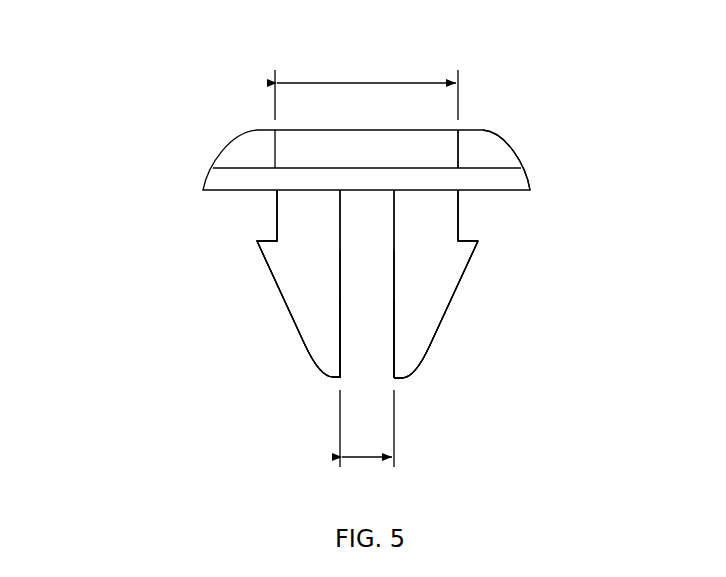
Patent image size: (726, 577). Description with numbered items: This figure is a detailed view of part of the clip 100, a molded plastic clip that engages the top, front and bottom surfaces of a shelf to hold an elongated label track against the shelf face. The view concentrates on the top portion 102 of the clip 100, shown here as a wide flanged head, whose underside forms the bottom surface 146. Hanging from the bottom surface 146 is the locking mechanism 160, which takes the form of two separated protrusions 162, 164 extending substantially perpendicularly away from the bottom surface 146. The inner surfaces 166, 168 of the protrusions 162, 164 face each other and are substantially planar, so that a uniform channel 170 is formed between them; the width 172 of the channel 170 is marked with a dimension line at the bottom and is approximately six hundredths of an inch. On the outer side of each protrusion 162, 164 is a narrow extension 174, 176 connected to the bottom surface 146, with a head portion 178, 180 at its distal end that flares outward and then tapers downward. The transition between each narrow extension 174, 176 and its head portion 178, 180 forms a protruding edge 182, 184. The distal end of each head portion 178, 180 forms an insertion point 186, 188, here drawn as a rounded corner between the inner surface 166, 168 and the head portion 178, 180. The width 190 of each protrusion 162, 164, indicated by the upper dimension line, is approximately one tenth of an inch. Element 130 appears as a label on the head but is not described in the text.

The clip 100 is at (555, 66).
The top portion 102 is at (475, 78).
The head 130 is at (258, 133).
The bottom surface 146 is at (531, 191).
The locking mechanism 160 is at (150, 301).
The protrusion 162 is at (493, 286).
The protrusion 164 is at (238, 286).
The inner surface 166 is at (394, 232).
The inner surface 168 is at (340, 260).
The channel 170 is at (369, 352).
The width of the channel 172 is at (370, 460).
The narrow extension 174 is at (459, 199).
The narrow extension 176 is at (277, 200).
The head portion 178 is at (449, 310).
The head portion 180 is at (283, 310).
The protruding edge 182 is at (477, 239).
The protruding edge 184 is at (256, 240).
The insertion point 186 is at (402, 378).
The insertion point 188 is at (331, 378).
The width of the protrusions 190 is at (413, 83).